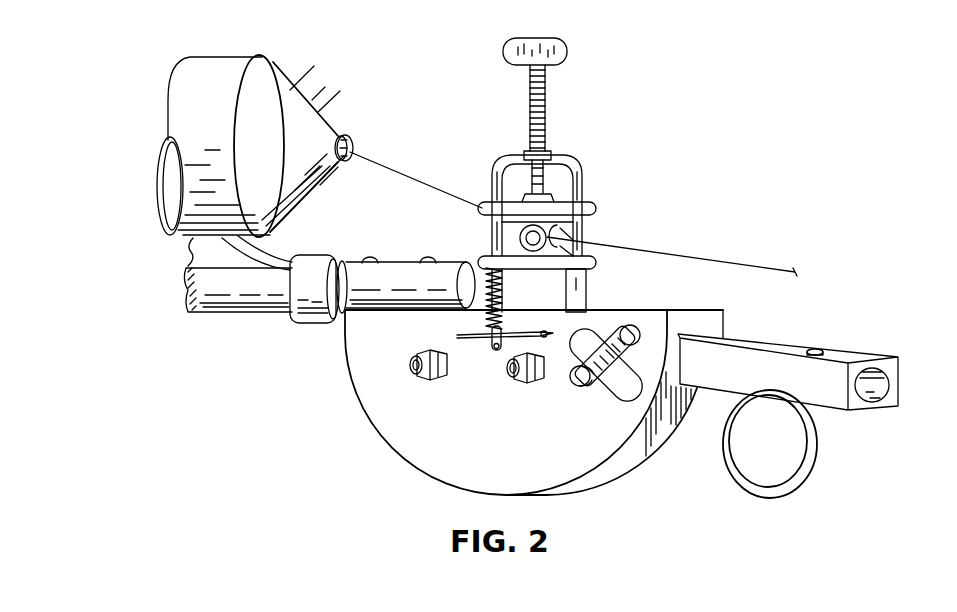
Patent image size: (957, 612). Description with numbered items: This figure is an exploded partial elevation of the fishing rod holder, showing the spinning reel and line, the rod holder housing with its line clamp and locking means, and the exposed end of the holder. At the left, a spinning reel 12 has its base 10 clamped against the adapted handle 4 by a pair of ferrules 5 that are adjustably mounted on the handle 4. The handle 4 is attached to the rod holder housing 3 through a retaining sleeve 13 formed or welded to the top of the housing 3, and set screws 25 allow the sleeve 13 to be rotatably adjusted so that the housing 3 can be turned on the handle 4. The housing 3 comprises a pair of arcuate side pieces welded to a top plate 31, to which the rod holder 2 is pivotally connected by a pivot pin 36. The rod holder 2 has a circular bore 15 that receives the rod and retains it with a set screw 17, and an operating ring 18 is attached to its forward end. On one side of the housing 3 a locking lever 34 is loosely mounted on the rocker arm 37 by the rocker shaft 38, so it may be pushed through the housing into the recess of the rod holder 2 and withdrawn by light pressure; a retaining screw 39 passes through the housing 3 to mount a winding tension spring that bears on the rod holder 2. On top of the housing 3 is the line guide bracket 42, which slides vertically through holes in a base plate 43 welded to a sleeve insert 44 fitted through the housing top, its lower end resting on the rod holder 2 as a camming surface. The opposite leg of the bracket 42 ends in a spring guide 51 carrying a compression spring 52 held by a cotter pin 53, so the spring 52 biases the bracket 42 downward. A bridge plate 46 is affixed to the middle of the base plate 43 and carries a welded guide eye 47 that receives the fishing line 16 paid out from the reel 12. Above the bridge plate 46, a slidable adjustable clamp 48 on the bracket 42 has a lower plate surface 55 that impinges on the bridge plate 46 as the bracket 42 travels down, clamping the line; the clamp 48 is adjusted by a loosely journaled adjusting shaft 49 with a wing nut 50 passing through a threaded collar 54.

The rod holder 2 is at (768, 346).
The rod holder housing 3 is at (410, 455).
The handle 4 is at (246, 306).
The ferrules 5 is at (314, 326).
The base 10 is at (268, 258).
The spinning reel 12 is at (310, 92).
The retaining sleeve 13 is at (437, 258).
The circular bore 15 is at (874, 387).
The fishing line 16 is at (698, 262).
The set screw 17 is at (820, 348).
The operating ring 18 is at (806, 478).
The set screws 25 is at (426, 259).
The top plate 31 is at (704, 310).
The locking lever 34 is at (642, 394).
The pivot pin 36 is at (512, 372).
The rocker arm 37 is at (600, 388).
The rocker shaft 38 is at (578, 385).
The retaining screw 39 is at (412, 366).
The line guide bracket 42 is at (508, 156).
The base plate 43 is at (597, 265).
The sleeve insert 44 is at (588, 290).
The bridge plate 46 is at (576, 248).
The guide eye 47 is at (520, 238).
The adjustable clamp 48 is at (590, 204).
The adjusting shaft 49 is at (548, 99).
The wing nut 50 is at (566, 43).
The spring guide 51 is at (492, 351).
The compression spring 52 is at (505, 291).
The cotter pin 53 is at (462, 337).
The threaded collar 54 is at (546, 156).
The lower plate surface 55 is at (572, 232).